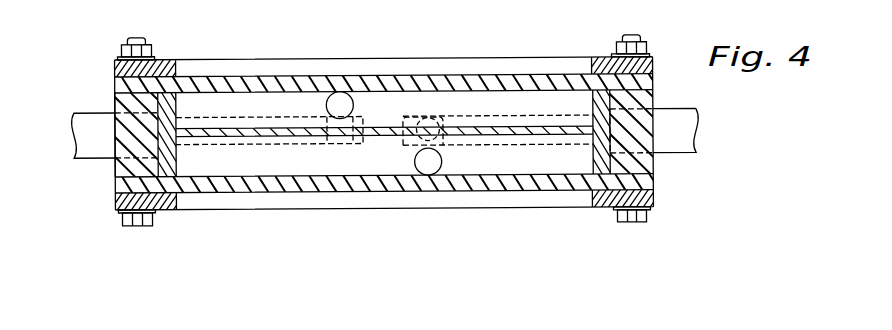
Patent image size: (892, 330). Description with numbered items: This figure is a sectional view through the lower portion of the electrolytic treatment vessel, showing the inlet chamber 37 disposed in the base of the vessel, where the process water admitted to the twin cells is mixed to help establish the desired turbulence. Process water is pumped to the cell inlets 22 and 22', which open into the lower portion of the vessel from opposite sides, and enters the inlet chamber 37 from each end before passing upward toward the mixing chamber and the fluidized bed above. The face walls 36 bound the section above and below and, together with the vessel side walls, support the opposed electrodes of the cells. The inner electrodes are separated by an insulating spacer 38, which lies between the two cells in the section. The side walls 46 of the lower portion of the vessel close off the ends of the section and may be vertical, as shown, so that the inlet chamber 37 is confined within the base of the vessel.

The cell inlet 22 is at (668, 129).
The cell inlet 22' is at (173, 135).
The face wall 36 is at (345, 60).
The inlet chamber 37 is at (491, 116).
The insulating spacer 38 is at (371, 131).
The side wall 46 is at (117, 168).